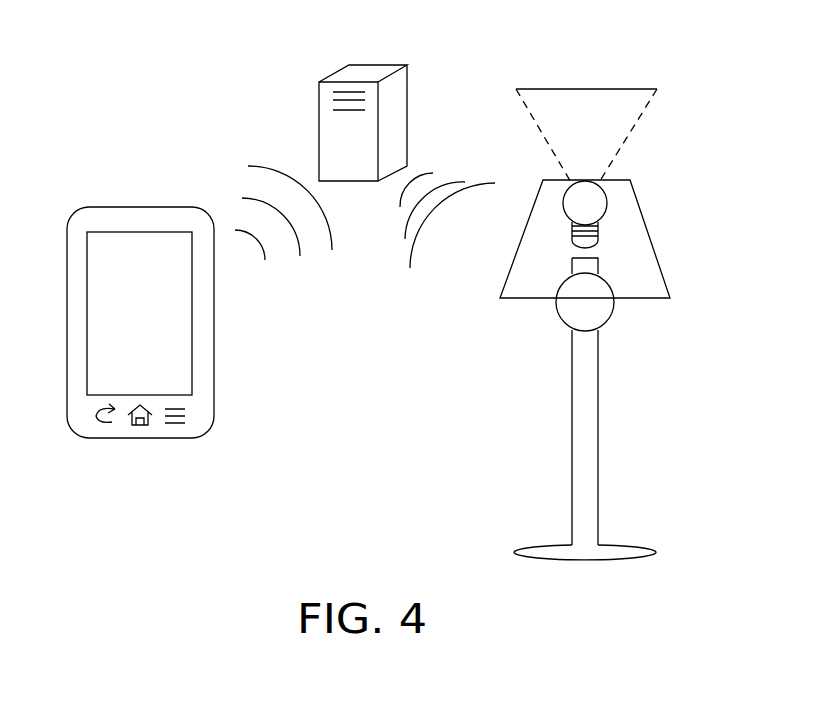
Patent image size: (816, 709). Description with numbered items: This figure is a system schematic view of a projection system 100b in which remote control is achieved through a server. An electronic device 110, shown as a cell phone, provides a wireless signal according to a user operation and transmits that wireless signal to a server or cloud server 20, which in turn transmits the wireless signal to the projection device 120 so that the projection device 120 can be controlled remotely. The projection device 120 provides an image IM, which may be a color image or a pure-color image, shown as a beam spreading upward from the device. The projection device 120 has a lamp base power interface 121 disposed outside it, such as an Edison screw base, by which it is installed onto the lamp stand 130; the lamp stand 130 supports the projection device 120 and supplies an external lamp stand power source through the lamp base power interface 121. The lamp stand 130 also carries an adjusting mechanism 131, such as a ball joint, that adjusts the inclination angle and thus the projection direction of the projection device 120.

The projection system 100b is at (107, 557).
The electronic device 110 is at (154, 207).
The cloud server 20 is at (378, 71).
The image IM is at (620, 88).
The projection device 120 is at (614, 205).
The lamp base power interface 121 is at (600, 233).
The lamp stand 130 is at (604, 375).
The adjusting mechanism 131 is at (600, 308).